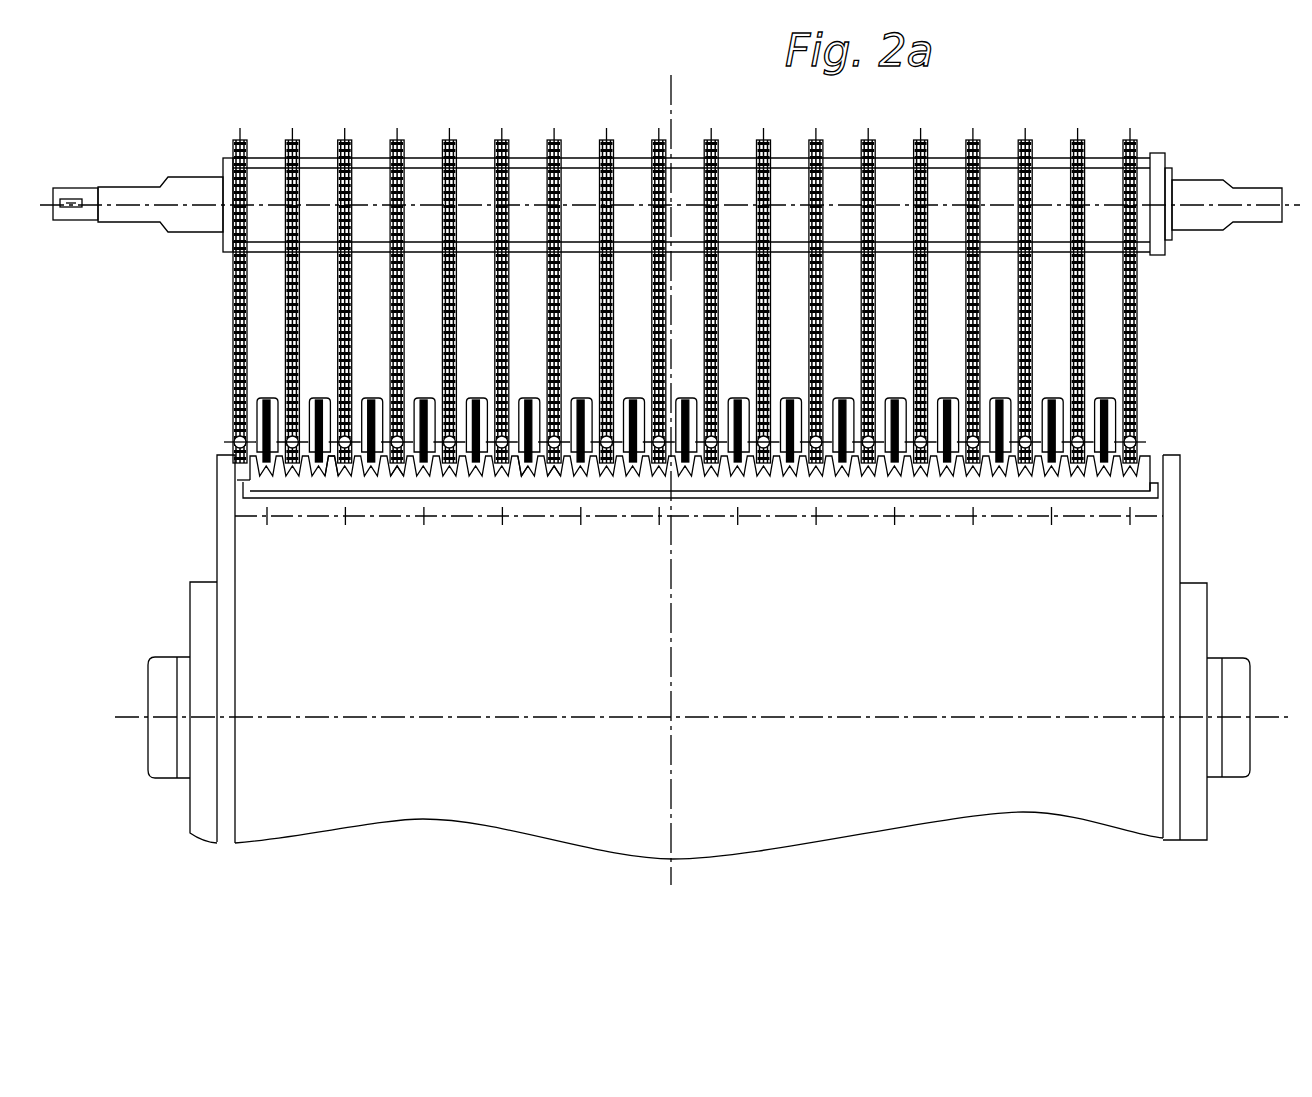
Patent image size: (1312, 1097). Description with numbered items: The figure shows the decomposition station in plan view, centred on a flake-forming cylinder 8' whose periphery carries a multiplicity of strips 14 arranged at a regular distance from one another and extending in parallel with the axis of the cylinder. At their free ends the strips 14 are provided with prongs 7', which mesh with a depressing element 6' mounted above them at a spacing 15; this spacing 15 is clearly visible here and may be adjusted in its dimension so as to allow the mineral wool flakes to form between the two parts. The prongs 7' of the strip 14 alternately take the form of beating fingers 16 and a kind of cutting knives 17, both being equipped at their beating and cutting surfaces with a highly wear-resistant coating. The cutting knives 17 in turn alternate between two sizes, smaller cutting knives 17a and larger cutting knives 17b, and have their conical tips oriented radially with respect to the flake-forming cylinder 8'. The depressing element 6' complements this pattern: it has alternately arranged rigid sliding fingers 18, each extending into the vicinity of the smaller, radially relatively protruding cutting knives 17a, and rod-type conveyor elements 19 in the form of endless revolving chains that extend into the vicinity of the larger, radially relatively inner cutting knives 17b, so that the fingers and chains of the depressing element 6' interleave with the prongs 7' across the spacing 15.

The depressing element 6' is at (670, 284).
The prongs 7' is at (759, 431).
The flake-forming cylinder 8' is at (702, 657).
The strips 14 is at (1140, 485).
The spacing 15 is at (215, 458).
The beating fingers 16 is at (332, 463).
The cutting knives 17 is at (397, 480).
The smaller cutting knives 17a is at (523, 477).
The larger cutting knives 17b is at (553, 480).
The rigid sliding fingers 18 is at (1135, 387).
The rod-type conveyor elements 19 is at (1135, 302).